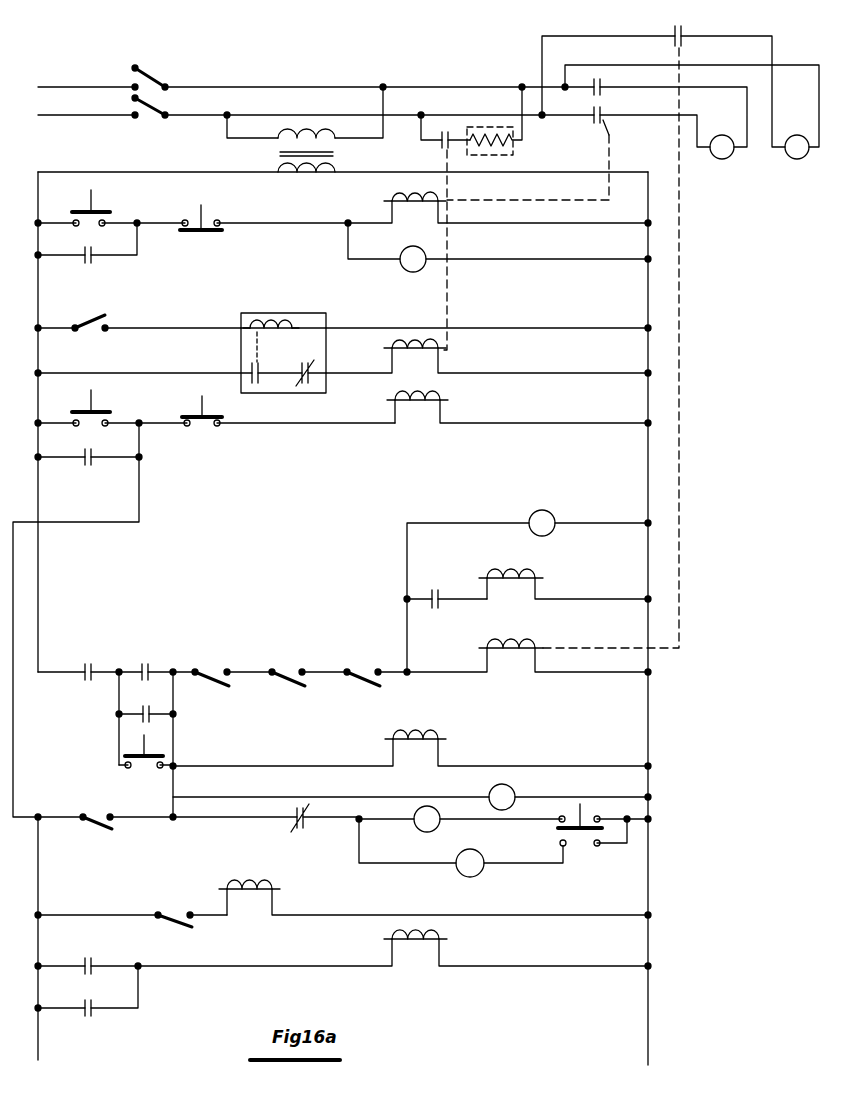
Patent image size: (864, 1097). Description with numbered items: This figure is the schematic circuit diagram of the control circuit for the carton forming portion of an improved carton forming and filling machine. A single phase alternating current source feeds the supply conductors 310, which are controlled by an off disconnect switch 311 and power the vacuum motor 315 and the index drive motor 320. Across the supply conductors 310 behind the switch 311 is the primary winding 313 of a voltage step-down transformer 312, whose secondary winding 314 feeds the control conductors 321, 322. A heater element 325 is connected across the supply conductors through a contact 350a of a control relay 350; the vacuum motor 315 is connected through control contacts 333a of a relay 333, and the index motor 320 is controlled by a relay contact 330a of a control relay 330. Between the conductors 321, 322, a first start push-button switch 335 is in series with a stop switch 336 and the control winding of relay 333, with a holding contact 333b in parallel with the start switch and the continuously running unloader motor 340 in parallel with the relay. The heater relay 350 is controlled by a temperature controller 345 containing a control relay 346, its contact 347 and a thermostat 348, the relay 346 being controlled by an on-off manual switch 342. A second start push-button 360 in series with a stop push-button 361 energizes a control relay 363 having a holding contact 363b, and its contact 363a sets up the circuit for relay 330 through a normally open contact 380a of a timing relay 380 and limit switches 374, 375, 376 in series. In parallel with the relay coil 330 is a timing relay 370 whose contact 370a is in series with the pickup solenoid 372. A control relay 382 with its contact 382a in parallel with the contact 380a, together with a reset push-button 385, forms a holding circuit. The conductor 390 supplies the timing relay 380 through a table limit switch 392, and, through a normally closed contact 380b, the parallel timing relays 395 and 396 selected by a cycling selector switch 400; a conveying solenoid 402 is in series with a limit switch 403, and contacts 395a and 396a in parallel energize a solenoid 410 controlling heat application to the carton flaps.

The conductors 310 is at (74, 114).
The disconnect switch 311 is at (164, 87).
The voltage step-down transformer 312 is at (276, 155).
The primary winding 313 is at (308, 140).
The secondary winding 314 is at (300, 178).
The vacuum motor 315 is at (722, 160).
The index drive motor 320 is at (798, 160).
The conductor 321 is at (86, 172).
The conductor 322 is at (654, 158).
The heater element 325 is at (515, 152).
The control relay 330 is at (522, 646).
The relay contact 330a is at (680, 32).
The relay 333 is at (380, 200).
The control contacts 333a is at (598, 80).
The holding contact 333b is at (90, 264).
The start push-button switch 335 is at (92, 212).
The stop switch 336 is at (204, 232).
The unloader motor 340 is at (413, 272).
The on-off manual switch 342 is at (88, 322).
The temperature controller 345 is at (282, 313).
The control relay 346 is at (300, 325).
The control contact 347 is at (250, 373).
The thermostat 348 is at (300, 388).
The control relay 350 is at (390, 350).
The contact 350a is at (444, 147).
The start push-button 360 is at (93, 410).
The stop push-button 361 is at (202, 426).
The control relay 363 is at (442, 404).
The contact 363a is at (90, 678).
The holding contact 363b is at (88, 466).
The timing relay 370 is at (543, 510).
The control contact 370a is at (435, 608).
The pickup solenoid 372 is at (516, 572).
The limit switch 374 is at (214, 664).
The limit switch 375 is at (286, 670).
The limit switch 376 is at (370, 670).
The timing relay 380 is at (514, 796).
The normally open contact 380a is at (145, 664).
The normally closed contact 380b is at (297, 828).
The control relay 382 is at (441, 738).
The contact 382a is at (138, 720).
The reset push-button 385 is at (147, 768).
The conductor 390 is at (112, 526).
The table limit switch 392 is at (100, 830).
The timing relay 395 is at (415, 818).
The contact 395a is at (92, 955).
The timing relay 396 is at (476, 860).
The contact 396a is at (88, 1018).
The cycling selector switch 400 is at (582, 838).
The conveying solenoid 402 is at (272, 892).
The limit switch 403 is at (175, 915).
The solenoid 410 is at (442, 941).